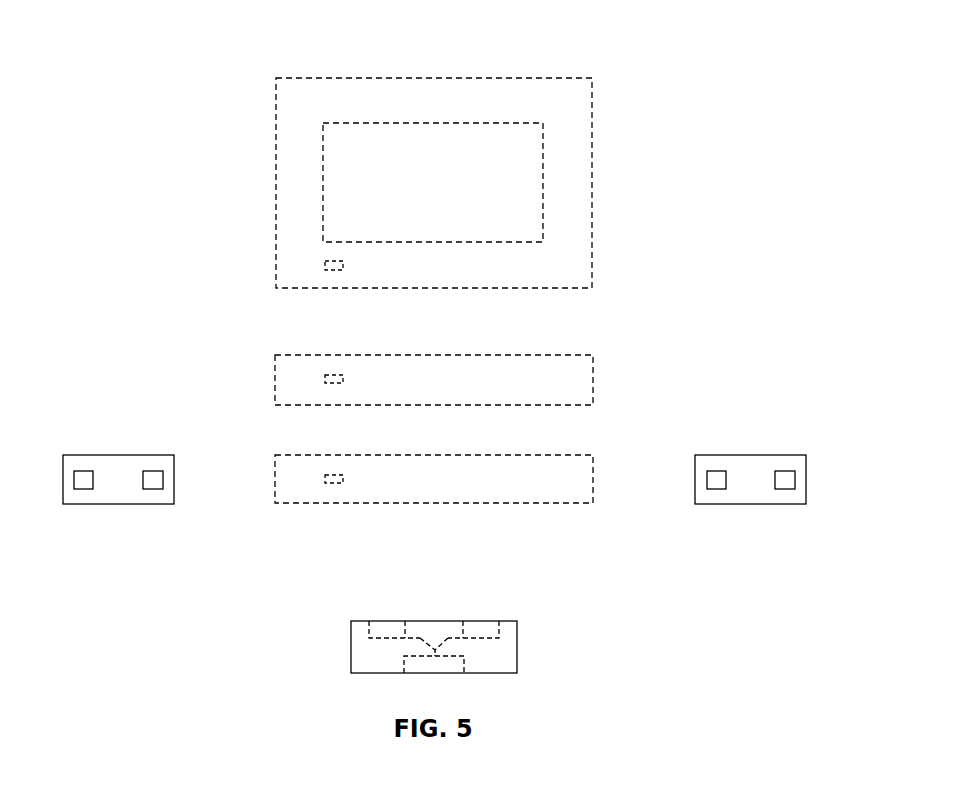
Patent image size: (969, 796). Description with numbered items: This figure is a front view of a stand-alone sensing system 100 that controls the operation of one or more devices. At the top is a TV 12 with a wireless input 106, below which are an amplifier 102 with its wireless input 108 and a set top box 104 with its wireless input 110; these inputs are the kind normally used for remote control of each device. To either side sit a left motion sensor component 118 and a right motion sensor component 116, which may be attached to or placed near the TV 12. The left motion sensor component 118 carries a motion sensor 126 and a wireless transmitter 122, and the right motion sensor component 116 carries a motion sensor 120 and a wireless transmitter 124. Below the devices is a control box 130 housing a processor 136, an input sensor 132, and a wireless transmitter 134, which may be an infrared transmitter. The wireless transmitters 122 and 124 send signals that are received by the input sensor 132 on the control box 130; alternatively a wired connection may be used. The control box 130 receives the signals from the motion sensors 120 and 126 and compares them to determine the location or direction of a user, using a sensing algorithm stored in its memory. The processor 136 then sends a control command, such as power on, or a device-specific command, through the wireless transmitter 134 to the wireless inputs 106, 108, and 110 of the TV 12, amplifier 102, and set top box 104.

The stand-alone sensing system 100 is at (170, 45).
The TV 12 is at (593, 100).
The wireless input 106 is at (325, 265).
The amplifier 102 is at (578, 355).
The wireless input 108 is at (328, 378).
The set top box 104 is at (578, 455).
The wireless input 110 is at (328, 478).
The left motion sensor component 118 is at (125, 478).
The motion sensor 126 is at (86, 489).
The wireless transmitter 122 is at (153, 489).
The right motion sensor component 116 is at (756, 476).
The wireless transmitter 124 is at (717, 489).
The motion sensor 120 is at (785, 489).
The control box 130 is at (455, 645).
The wireless transmitter 134 is at (385, 621).
The input sensor 132 is at (478, 621).
The processor 136 is at (435, 673).